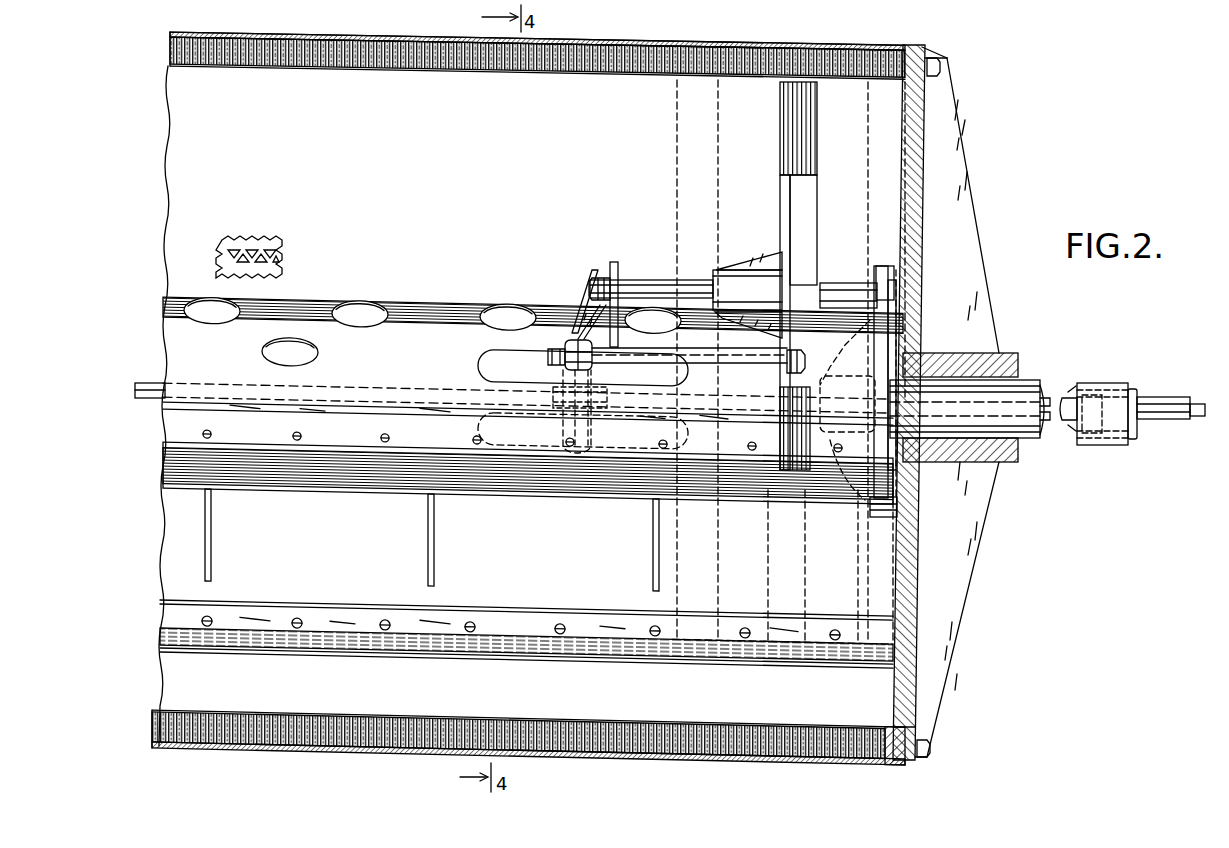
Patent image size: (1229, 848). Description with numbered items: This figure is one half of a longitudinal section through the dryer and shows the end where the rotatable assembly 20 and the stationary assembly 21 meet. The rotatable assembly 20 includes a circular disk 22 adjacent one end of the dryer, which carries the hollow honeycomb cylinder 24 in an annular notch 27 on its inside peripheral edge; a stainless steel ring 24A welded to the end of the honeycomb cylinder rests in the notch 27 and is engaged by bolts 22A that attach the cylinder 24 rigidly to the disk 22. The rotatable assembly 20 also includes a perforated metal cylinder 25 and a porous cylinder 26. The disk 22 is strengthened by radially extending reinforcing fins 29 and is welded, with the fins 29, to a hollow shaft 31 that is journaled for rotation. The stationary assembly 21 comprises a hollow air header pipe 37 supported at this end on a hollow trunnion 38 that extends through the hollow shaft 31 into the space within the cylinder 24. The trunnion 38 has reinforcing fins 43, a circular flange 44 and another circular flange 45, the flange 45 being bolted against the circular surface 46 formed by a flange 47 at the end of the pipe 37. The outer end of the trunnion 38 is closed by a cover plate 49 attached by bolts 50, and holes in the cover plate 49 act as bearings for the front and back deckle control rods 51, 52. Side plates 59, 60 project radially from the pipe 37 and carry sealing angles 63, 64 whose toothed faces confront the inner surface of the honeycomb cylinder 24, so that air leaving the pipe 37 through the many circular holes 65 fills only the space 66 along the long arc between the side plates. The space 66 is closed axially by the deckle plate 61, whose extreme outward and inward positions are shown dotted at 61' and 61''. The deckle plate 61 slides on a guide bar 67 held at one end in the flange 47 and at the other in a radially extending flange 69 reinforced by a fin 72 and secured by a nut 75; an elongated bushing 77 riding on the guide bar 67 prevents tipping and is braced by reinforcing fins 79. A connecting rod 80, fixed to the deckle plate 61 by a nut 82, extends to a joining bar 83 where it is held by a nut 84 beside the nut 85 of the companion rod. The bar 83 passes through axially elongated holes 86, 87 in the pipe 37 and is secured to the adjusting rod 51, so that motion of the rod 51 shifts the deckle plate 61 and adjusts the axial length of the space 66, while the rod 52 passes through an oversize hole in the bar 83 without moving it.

The rotatable assembly 20 is at (156, 124).
The stationary assembly 21 is at (545, 485).
The circular disk 22 is at (910, 552).
The bolts 22A is at (925, 742).
The honeycomb cylinder 24 is at (240, 238).
The stainless steel ring 24A is at (900, 765).
The perforated metal cylinder 25 is at (657, 42).
The porous cylinder 26 is at (584, 40).
The annular notch 27 is at (932, 748).
The reinforcing fins 29 is at (962, 175).
The hollow shaft 31 is at (1010, 353).
The air header pipe 37 is at (440, 292).
The hollow trunnion 38 is at (1032, 385).
The reinforcing fins 43 is at (843, 283).
The circular flange 44 is at (908, 305).
The circular flange 45 is at (898, 507).
The circular surface 46 is at (890, 330).
The flange 47 is at (882, 266).
The cover plate 49 is at (1120, 384).
The bolts 50 is at (1136, 392).
The front deckle control rod 51 is at (1197, 402).
The back deckle control rod 52 is at (1152, 420).
The side plate 59 is at (170, 419).
The side plate 60 is at (165, 605).
The deckle plate 61 is at (782, 276).
The extreme outward position of deckle plate 61' is at (867, 361).
The inner position of deckle plate 61'' is at (679, 360).
The sealing angle 63 is at (305, 480).
The sealing angle 64 is at (433, 642).
The circular holes 65 is at (508, 292).
The space 66 is at (416, 158).
The guide bar 67 is at (651, 282).
The radially extending flange 69 is at (615, 262).
The fin 72 is at (580, 300).
The nut 75 is at (592, 285).
The bushing 77 is at (714, 283).
The reinforcing fins 79 is at (750, 262).
The connecting rod 80 is at (736, 364).
The nut 82 is at (803, 356).
The joining bar 83 is at (572, 345).
The nut 84 is at (548, 360).
The nut 85 is at (555, 408).
The elongated hole 86 is at (478, 355).
The elongated hole 87 is at (478, 418).